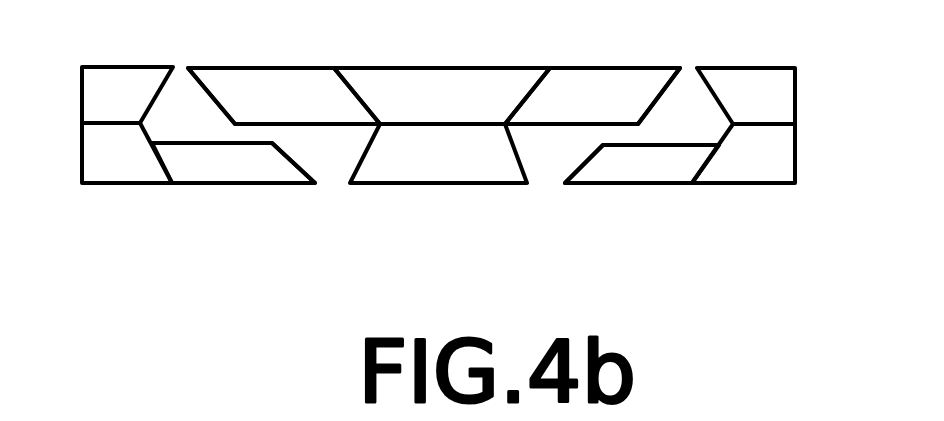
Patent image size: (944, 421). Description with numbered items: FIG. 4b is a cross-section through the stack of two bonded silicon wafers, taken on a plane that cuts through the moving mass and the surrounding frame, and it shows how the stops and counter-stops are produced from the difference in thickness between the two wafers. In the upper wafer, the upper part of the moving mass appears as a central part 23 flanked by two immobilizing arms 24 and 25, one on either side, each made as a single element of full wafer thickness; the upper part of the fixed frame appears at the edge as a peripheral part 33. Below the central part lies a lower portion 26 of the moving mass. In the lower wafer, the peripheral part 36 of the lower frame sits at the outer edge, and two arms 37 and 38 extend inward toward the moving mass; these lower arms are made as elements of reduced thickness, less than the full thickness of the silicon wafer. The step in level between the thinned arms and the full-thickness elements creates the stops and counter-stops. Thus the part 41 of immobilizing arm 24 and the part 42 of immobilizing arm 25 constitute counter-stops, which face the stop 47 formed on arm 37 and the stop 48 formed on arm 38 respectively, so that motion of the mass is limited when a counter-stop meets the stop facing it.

The central part 23 is at (432, 80).
The immobilizing arm 24 is at (303, 80).
The immobilizing arm 25 is at (590, 80).
The lower trapezoidal plate section 26 is at (455, 172).
The peripheral part 33 is at (121, 82).
The peripheral part 36 is at (133, 172).
The arm 37 is at (213, 172).
The arm 38 is at (687, 172).
The counter-stop part 41 is at (223, 80).
The counter-stop part 42 is at (657, 80).
The stop part 47 is at (273, 172).
The stop part 48 is at (603, 172).